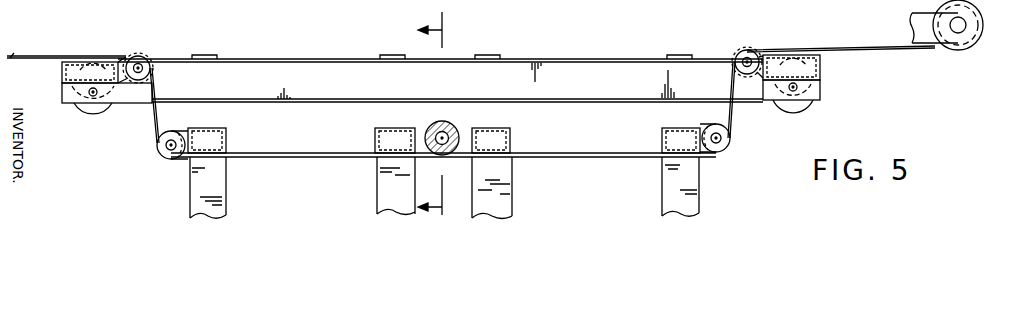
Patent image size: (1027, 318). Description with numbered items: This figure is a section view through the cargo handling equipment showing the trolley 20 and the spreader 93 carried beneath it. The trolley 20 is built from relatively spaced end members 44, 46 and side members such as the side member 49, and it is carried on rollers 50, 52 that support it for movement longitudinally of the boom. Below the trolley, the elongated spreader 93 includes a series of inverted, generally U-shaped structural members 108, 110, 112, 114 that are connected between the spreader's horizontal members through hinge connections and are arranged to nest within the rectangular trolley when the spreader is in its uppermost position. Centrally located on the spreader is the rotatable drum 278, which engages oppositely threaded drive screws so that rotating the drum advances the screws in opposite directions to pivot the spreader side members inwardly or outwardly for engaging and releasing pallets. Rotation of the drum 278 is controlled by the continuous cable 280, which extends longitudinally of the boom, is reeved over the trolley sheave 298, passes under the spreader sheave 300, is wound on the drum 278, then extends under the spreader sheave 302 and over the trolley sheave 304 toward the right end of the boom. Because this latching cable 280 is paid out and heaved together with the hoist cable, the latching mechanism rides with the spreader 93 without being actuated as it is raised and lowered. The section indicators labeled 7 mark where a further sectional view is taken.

The trolley 20 is at (555, 50).
The side member 49 is at (617, 72).
The continuous cable 280 is at (45, 53).
The sheave 298 is at (143, 56).
The sheave 300 is at (160, 153).
The spreader sheave 302 is at (727, 147).
The trolley sheave 304 is at (742, 50).
The end member 44 is at (67, 75).
The end member 46 is at (820, 68).
The roller 50 is at (88, 110).
The roller 52 is at (807, 107).
The rotatable drum 278 is at (450, 128).
The inverted U-shaped structural member 108 is at (217, 189).
The inverted U-shaped structural member 110 is at (385, 184).
The inverted U-shaped structural member 112 is at (502, 183).
The inverted U-shaped structural member 114 is at (672, 183).
The elongated spreader 93 is at (180, 217).
The section line 7- 7 is at (439, 113).